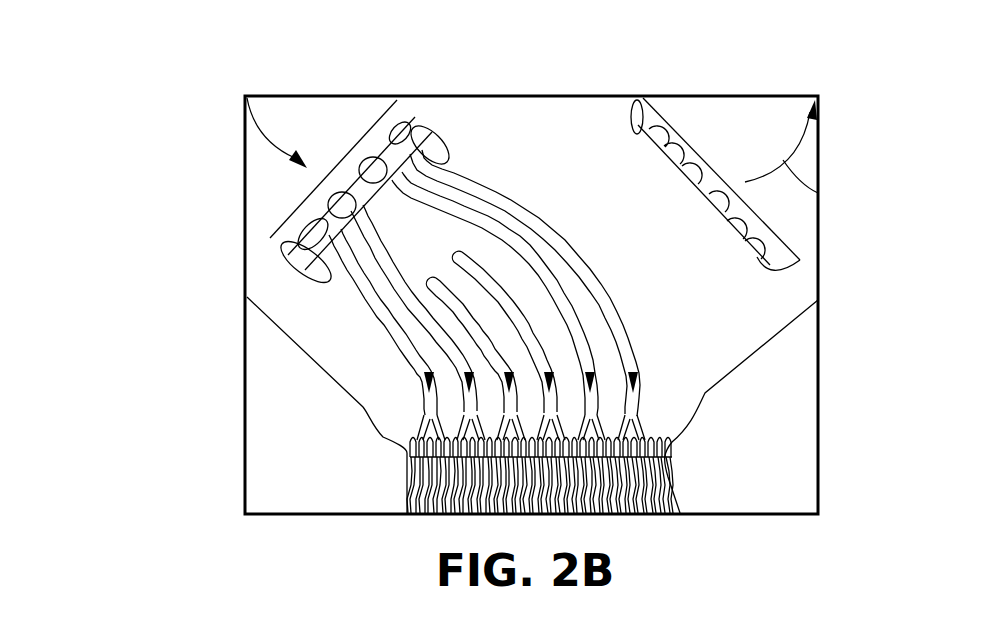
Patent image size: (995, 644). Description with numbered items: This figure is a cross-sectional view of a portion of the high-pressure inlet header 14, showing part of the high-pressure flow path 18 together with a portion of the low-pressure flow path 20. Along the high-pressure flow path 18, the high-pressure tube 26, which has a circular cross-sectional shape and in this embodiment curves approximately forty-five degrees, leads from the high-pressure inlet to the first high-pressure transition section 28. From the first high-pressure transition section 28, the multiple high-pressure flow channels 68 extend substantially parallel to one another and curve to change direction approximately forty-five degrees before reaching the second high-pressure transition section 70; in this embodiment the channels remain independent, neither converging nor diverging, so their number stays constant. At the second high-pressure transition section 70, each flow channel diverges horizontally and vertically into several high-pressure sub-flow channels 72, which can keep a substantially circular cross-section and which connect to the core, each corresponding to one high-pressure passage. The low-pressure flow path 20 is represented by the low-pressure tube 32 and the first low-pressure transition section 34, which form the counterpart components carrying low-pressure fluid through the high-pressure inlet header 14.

The high-pressure inlet header 14 is at (158, 250).
The high-pressure flow path 18 is at (270, 137).
The low-pressure flow path 20 is at (818, 193).
The high-pressure tube 26 is at (262, 192).
The first high-pressure transition section 28 is at (280, 247).
The low-pressure tube 32 is at (705, 120).
The first low-pressure transition section 34 is at (793, 260).
The multiple high-pressure flow channels 68 is at (363, 312).
The second high-pressure transition section 70 is at (403, 437).
The high-pressure sub-flow channels 72 is at (413, 493).